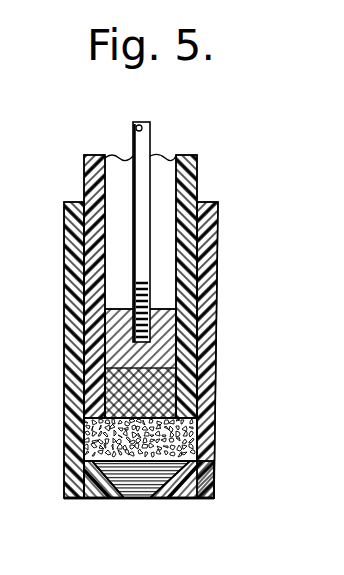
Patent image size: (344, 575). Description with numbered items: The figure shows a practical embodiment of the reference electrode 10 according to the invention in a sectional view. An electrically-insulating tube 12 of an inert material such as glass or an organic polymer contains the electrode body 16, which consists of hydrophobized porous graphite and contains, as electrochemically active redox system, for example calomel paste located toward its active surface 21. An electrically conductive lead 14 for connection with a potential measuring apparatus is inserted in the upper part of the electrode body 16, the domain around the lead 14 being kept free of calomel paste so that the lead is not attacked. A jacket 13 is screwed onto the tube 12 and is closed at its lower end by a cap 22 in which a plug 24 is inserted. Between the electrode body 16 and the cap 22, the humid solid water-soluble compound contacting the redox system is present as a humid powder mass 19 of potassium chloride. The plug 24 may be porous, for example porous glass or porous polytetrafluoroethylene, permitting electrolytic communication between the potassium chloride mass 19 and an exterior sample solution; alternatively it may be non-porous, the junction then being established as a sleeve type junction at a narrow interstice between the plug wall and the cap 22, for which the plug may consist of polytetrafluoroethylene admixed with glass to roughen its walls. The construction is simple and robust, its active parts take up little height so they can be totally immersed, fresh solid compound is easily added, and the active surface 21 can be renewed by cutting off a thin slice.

The ion-sensitive electrode 10 is at (142, 331).
The tube 12 is at (65, 290).
The jacket 13 is at (83, 343).
The electrically conductive lead 14 is at (150, 230).
The electrode body 16 is at (152, 362).
The humid powder mass 19 is at (197, 445).
The active surface 21 is at (127, 500).
The cap 22 is at (77, 500).
The plug 24 is at (215, 494).